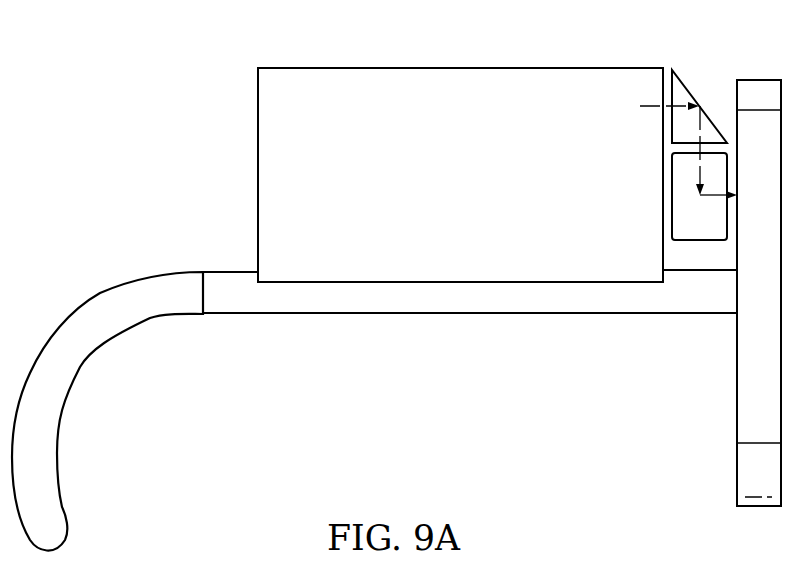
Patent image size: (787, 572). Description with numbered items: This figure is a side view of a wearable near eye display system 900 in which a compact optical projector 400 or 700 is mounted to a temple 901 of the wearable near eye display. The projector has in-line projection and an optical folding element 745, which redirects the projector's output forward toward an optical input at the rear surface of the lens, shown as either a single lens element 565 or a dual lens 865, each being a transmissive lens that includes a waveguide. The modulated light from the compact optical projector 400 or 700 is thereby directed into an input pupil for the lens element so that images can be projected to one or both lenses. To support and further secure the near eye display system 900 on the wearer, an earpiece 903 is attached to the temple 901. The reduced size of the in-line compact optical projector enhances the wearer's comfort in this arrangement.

The near eye display system 900 is at (146, 57).
The temple 901 is at (223, 278).
The earpiece 903 is at (110, 305).
The compact optical projector 400 is at (527, 187).
The compact optical projector 700 is at (460, 175).
The optical folding element 745 is at (722, 85).
The single lens element 565 is at (746, 410).
The dual lens 865 is at (759, 293).